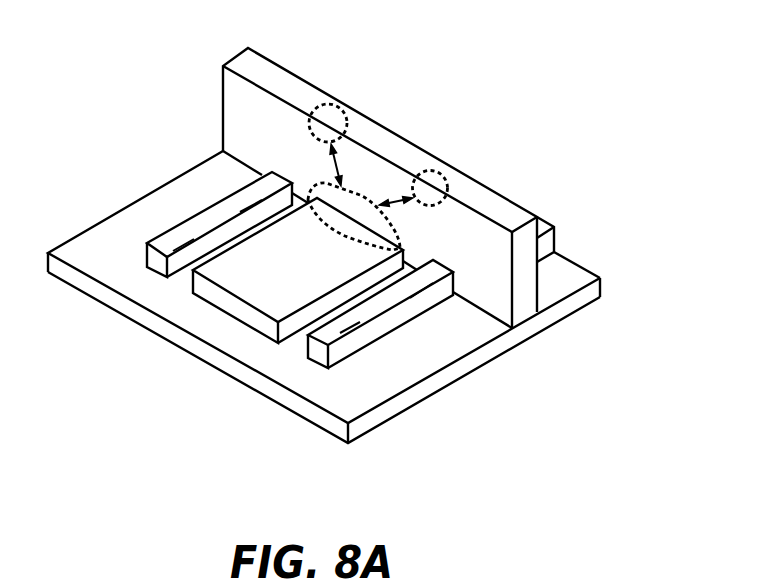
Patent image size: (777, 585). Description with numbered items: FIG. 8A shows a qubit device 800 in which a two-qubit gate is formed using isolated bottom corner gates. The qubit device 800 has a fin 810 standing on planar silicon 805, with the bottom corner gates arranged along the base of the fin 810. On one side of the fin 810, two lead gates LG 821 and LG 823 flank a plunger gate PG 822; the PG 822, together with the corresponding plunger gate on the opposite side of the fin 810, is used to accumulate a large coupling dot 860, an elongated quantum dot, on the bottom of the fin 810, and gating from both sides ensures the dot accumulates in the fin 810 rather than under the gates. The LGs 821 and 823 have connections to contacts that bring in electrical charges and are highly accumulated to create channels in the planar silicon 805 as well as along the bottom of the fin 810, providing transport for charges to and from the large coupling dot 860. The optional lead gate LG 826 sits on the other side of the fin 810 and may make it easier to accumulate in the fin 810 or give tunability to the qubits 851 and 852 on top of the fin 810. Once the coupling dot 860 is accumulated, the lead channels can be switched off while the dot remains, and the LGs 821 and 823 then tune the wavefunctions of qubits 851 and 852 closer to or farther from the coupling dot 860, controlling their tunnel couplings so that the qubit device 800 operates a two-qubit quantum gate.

The qubit device 800 is at (165, 434).
The planar silicon 805 is at (472, 365).
The fin 810 is at (525, 249).
The bottom corner gate (LG) 821 is at (172, 240).
The bottom corner gate (PG) 822 is at (247, 315).
The bottom corner gate (LG) 823 is at (313, 357).
The bottom corner gate (LG) 826 is at (545, 243).
The qubit 851 is at (332, 112).
The qubit 852 is at (438, 172).
The large coupling dot 860 is at (367, 200).